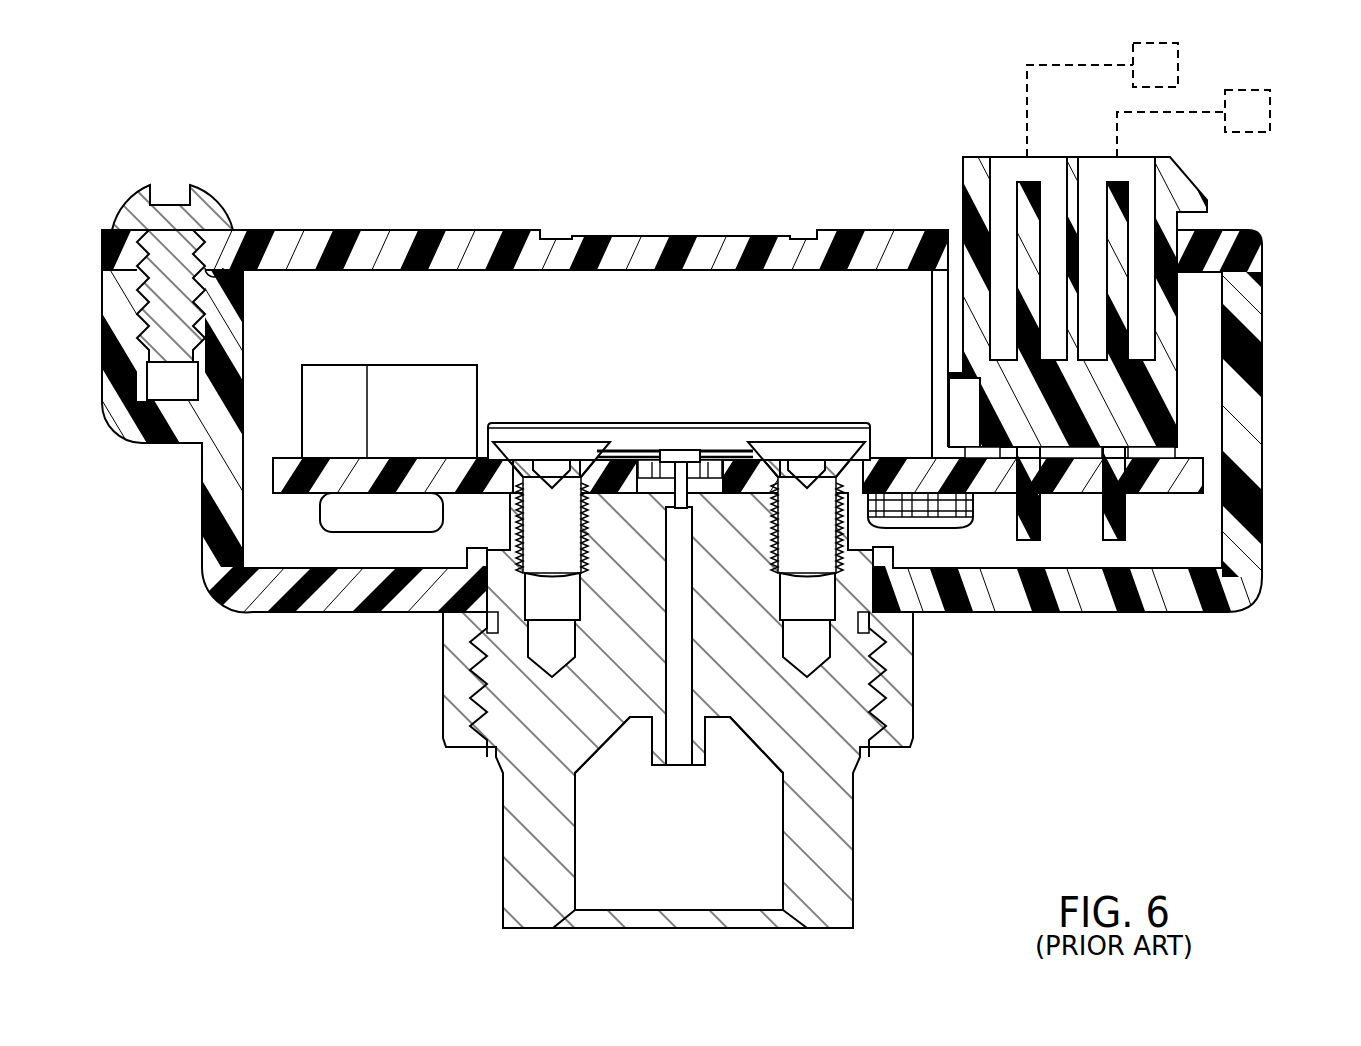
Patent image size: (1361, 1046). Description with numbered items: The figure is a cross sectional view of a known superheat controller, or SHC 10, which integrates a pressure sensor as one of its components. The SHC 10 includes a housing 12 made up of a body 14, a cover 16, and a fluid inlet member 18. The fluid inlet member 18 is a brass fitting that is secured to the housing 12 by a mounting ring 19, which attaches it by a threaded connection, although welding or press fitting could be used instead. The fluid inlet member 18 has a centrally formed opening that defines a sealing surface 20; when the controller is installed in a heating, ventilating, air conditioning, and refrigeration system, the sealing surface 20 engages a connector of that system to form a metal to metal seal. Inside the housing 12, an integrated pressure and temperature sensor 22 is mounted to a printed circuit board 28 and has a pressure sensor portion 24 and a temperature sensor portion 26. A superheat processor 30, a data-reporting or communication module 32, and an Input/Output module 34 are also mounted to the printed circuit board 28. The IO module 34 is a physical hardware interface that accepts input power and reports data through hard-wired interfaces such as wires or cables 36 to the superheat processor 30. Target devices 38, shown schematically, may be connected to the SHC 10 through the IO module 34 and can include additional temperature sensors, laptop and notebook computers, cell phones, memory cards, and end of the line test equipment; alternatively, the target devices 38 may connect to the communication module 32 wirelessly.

The superheat controller 10 is at (130, 122).
The housing 12 is at (200, 585).
The body 14 is at (205, 475).
The cover 16 is at (318, 248).
The fluid inlet member 18 is at (515, 853).
The mounting ring 19 is at (443, 692).
The sealing surface 20 is at (765, 757).
The integrated pressure and temperature sensor 22 is at (679, 440).
The pressure sensor portion 24 is at (645, 450).
The temperature sensor portion 26 is at (708, 452).
The printed circuit board 28 is at (1195, 473).
The superheat processor 30 is at (336, 380).
The communication module 32 is at (958, 528).
The IO module 34 is at (1207, 186).
The wires or cables 36 is at (1027, 120).
The target devices 38 is at (1180, 65).